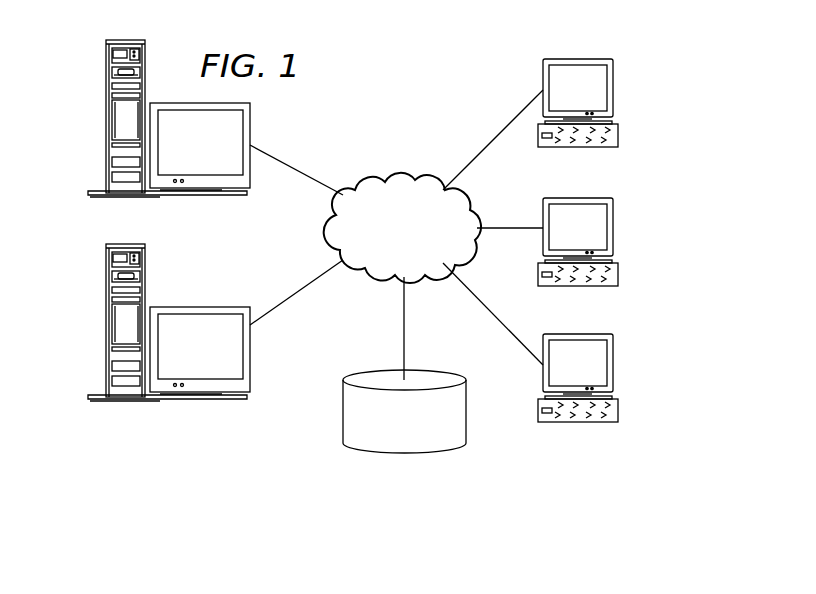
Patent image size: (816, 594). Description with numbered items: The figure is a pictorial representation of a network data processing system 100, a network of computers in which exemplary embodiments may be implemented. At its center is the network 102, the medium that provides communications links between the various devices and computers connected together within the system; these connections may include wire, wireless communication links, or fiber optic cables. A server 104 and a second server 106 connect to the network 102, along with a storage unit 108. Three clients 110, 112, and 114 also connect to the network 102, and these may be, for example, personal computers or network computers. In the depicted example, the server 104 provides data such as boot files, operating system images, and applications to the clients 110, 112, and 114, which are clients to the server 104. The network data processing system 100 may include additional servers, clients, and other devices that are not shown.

The network data processing system 100 is at (457, 68).
The network 102 is at (377, 181).
The server 104 is at (106, 118).
The server 106 is at (106, 322).
The storage unit 108 is at (387, 453).
The client 110 is at (613, 89).
The client 112 is at (613, 228).
The client 114 is at (613, 365).